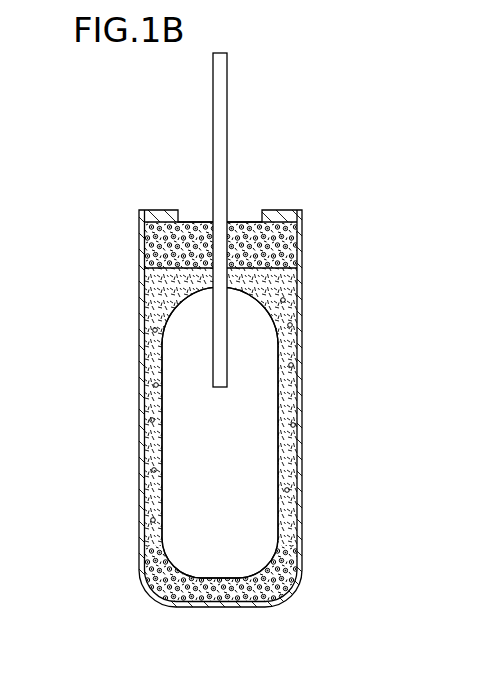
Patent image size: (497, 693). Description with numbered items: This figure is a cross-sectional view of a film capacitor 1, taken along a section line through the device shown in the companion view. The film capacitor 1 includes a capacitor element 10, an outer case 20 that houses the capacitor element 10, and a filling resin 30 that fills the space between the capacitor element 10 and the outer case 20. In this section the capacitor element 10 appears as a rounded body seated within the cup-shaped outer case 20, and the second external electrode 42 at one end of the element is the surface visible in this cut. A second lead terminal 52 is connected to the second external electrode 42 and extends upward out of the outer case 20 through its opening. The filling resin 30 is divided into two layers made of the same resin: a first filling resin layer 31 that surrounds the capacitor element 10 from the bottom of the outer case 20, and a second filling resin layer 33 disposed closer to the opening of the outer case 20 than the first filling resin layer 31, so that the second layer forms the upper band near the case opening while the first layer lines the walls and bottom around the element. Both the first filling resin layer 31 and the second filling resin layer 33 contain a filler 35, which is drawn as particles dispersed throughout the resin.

The film capacitor 1 is at (119, 126).
The capacitor element 10 is at (250, 289).
The outer case 20 is at (140, 477).
The filling resin 30 is at (377, 230).
The first filling resin layer 31 is at (295, 312).
The second filling resin layer 33 is at (300, 252).
The filler 35 is at (293, 365).
The second external electrode 42 is at (185, 432).
The second lead terminal 52 is at (220, 179).